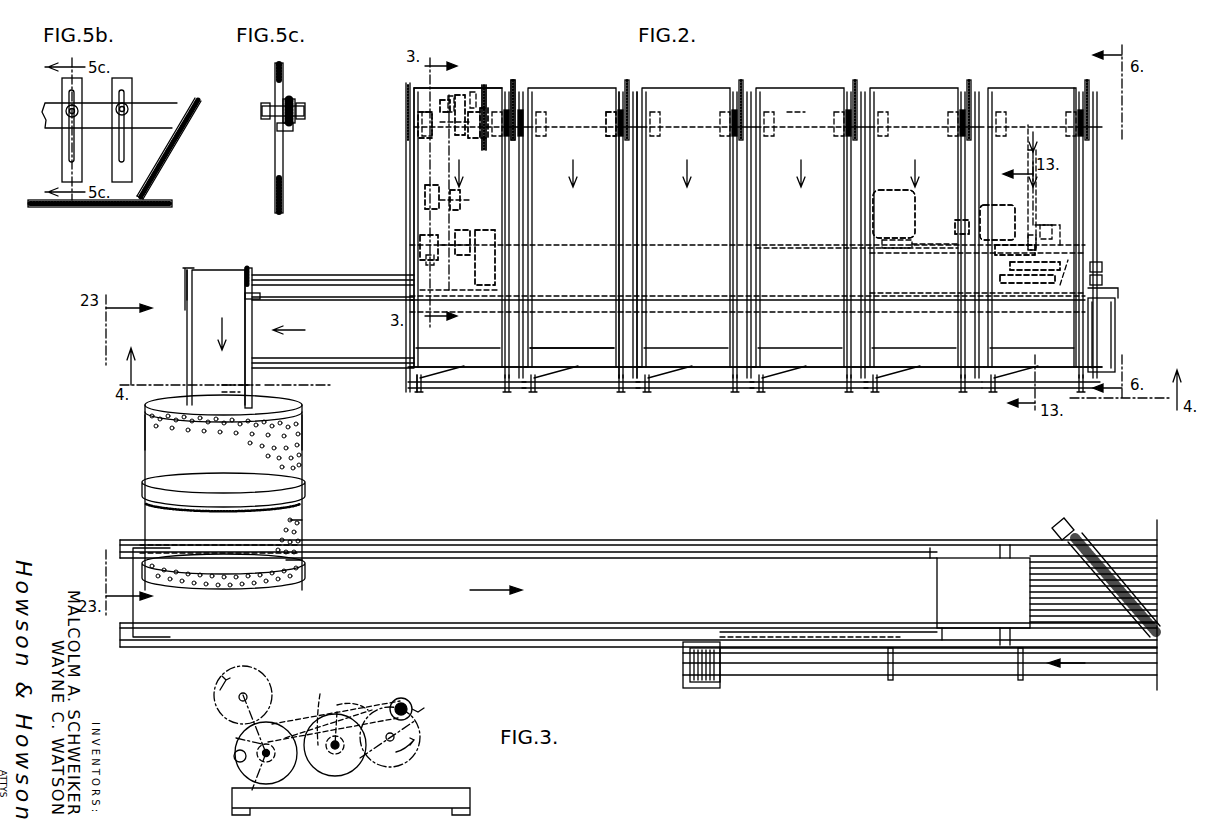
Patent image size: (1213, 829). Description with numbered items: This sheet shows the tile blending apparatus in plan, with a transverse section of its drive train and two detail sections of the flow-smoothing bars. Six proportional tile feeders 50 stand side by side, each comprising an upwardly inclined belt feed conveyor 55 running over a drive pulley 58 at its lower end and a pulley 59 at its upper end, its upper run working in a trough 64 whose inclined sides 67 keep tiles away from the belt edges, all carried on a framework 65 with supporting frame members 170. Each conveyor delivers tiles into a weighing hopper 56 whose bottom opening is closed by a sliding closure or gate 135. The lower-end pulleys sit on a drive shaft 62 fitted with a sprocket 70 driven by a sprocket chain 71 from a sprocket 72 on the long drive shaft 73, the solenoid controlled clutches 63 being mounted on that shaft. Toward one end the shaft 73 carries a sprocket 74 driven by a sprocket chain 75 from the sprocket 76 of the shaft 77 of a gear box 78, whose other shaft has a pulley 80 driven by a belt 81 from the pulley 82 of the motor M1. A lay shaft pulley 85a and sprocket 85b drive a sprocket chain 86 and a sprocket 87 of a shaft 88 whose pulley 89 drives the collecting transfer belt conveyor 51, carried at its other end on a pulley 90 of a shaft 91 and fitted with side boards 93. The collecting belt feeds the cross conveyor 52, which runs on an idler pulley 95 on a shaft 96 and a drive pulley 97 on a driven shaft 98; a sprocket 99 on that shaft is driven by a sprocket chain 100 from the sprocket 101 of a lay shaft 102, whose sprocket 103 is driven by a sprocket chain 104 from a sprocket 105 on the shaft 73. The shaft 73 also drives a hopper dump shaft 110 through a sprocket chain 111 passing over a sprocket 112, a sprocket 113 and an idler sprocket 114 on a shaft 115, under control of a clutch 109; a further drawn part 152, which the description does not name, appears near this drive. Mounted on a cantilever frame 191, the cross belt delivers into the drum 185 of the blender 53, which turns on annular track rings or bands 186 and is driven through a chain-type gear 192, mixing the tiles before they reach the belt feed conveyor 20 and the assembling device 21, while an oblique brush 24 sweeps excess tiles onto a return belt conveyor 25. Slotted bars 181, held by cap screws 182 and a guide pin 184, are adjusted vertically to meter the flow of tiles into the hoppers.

In FIG. 2, the belt feed conveyor 20 is at (662, 585).
In FIG. 2, the assembling device 21 is at (1018, 556).
In FIG. 2, the oblique brush 24 is at (1104, 548).
In FIG. 2, the return belt conveyor 25 is at (958, 672).
In FIG. 2, the proportional tile feeder 50 is at (467, 78).
In FIG. 2, the collecting transfer belt conveyor 51 is at (1100, 338).
In FIG. 2, the cross conveyor 52 is at (200, 318).
In FIG. 2, the power operated mixer or blender 53 is at (316, 512).
In FIG. 5B, the upwardly inclined belt feed conveyor 55 is at (118, 208).
In FIG. 2, the upwardly inclined belt feed conveyor 55 is at (570, 227).
In FIG. 2, the weighing hopper 56 is at (462, 378).
In FIG. 2, the drive pulley 58 is at (412, 98).
In FIG. 2, the upper-end pulley 59 is at (500, 320).
In FIG. 2, the drive shaft 62 is at (524, 118).
In FIG. 3, the drive shaft 62 is at (243, 695).
In FIG. 2, the solenoid controlled clutch 63 is at (606, 116).
In FIG. 5B, the trough 64 is at (236, 98).
In FIG. 3, the framework 65 is at (498, 774).
In FIG. 5B, the inclined sides 67 is at (160, 172).
In FIG. 2, the sprocket 70 is at (513, 80).
In FIG. 3, the sprocket 70 is at (276, 716).
In FIG. 3, the sprocket chain 71 is at (236, 738).
In FIG. 2, the sprocket 72 is at (532, 136).
In FIG. 2, the long drive shaft 73 is at (792, 122).
In FIG. 3, the long drive shaft 73 is at (258, 760).
In FIG. 2, the sprocket 74 is at (1020, 120).
In FIG. 2, the sprocket chain 75 is at (1010, 204).
In FIG. 2, the sprocket 76 is at (1032, 232).
In FIG. 2, the gear box shaft 77 is at (1046, 230).
In FIG. 2, the gear box 78 is at (962, 228).
In FIG. 2, the pulley 80 is at (1028, 254).
In FIG. 2, the belt 81 is at (948, 252).
In FIG. 2, the pulley 82 is at (892, 250).
In FIG. 2, the pulley 85a is at (1037, 271).
In FIG. 2, the sprocket 85b is at (1027, 284).
In FIG. 2, the sprocket chain 86 is at (1058, 284).
In FIG. 2, the sprocket 87 is at (1104, 272).
In FIG. 2, the shaft 88 is at (1100, 257).
In FIG. 2, the pulley 89 is at (1116, 288).
In FIG. 2, the pulley 90 is at (262, 284).
In FIG. 2, the shaft 91 is at (244, 296).
In FIG. 2, the side boards 93 is at (342, 306).
In FIG. 2, the idler pulley 95 is at (200, 404).
In FIG. 2, the shaft 96 is at (200, 390).
In FIG. 2, the drive pulley 97 is at (188, 266).
In FIG. 2, the driven shaft 98 is at (249, 266).
In FIG. 3, the driven shaft 98 is at (402, 698).
In FIG. 2, the sprocket 99 is at (448, 240).
In FIG. 3, the sprocket 99 is at (424, 708).
In FIG. 2, the sprocket chain 100 is at (412, 232).
In FIG. 3, the sprocket chain 100 is at (392, 696).
In FIG. 2, the sprocket 101 is at (412, 216).
In FIG. 3, the sprocket 101 is at (358, 704).
In FIG. 2, the lay shaft 102 is at (458, 228).
In FIG. 3, the lay shaft 102 is at (348, 712).
In FIG. 2, the sprocket 103 is at (464, 190).
In FIG. 3, the sprocket 103 is at (340, 772).
In FIG. 2, the sprocket chain 104 is at (450, 180).
In FIG. 3, the sprocket chain 104 is at (304, 728).
In FIG. 2, the sprocket 105 is at (448, 96).
In FIG. 3, the sprocket 105 is at (328, 756).
In FIG. 2, the clutch 109 is at (442, 104).
In FIG. 2, the hopper dump shaft 110 is at (823, 256).
In FIG. 3, the hopper dump shaft 110 is at (396, 737).
In FIG. 2, the sprocket chain 111 is at (482, 242).
In FIG. 3, the sprocket chain 111 is at (318, 710).
In FIG. 2, the sprocket 112 is at (490, 276).
In FIG. 3, the sprocket 112 is at (424, 722).
In FIG. 2, the sprocket 113 is at (480, 146).
In FIG. 3, the sprocket 113 is at (254, 778).
In FIG. 2, the idler sprocket 114 is at (486, 88).
In FIG. 3, the idler sprocket 114 is at (245, 752).
In FIG. 2, the shaft 115 is at (484, 100).
In FIG. 3, the shaft 115 is at (236, 760).
In FIG. 2, the sliding closure or gate 135 is at (420, 392).
In FIG. 2, the actuator 152 is at (1100, 230).
In FIG. 2, the supporting frame members 170 is at (406, 178).
In FIG. 5B, the slotted bars 181 is at (62, 85).
In FIG. 5C, the slotted bars 181 is at (272, 66).
In FIG. 5B, the cap screws 182 is at (132, 106).
In FIG. 5C, the cap screws 182 is at (300, 106).
In FIG. 5B, the guide pin 184 is at (76, 117).
In FIG. 2, the drum 185 is at (158, 466).
In FIG. 2, the annular track rings or bands 186 is at (302, 410).
In FIG. 2, the cantilever frame 191 is at (186, 287).
In FIG. 2, the gear of the chain type 192 is at (142, 496).
In FIG. 2, the motor M1 is at (890, 190).